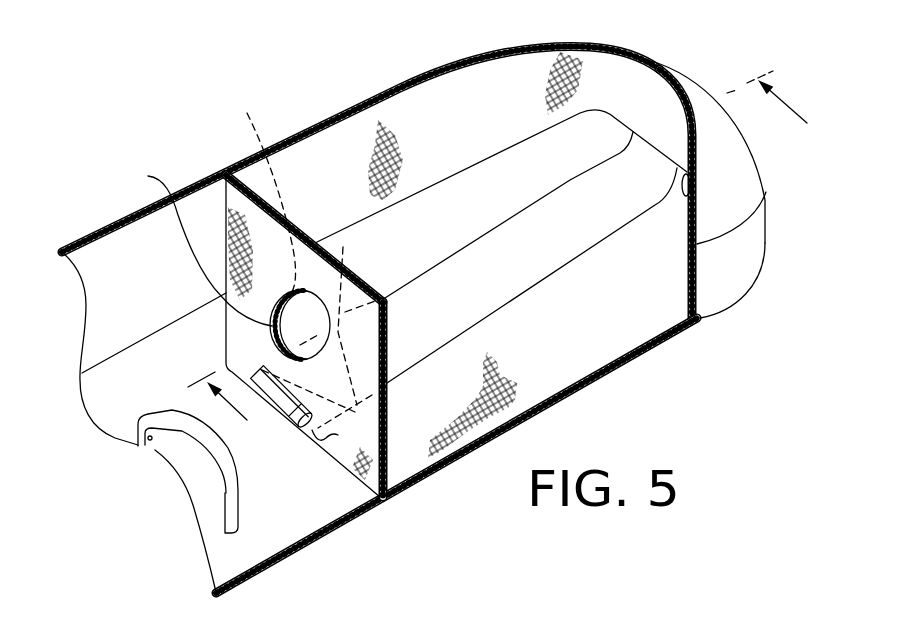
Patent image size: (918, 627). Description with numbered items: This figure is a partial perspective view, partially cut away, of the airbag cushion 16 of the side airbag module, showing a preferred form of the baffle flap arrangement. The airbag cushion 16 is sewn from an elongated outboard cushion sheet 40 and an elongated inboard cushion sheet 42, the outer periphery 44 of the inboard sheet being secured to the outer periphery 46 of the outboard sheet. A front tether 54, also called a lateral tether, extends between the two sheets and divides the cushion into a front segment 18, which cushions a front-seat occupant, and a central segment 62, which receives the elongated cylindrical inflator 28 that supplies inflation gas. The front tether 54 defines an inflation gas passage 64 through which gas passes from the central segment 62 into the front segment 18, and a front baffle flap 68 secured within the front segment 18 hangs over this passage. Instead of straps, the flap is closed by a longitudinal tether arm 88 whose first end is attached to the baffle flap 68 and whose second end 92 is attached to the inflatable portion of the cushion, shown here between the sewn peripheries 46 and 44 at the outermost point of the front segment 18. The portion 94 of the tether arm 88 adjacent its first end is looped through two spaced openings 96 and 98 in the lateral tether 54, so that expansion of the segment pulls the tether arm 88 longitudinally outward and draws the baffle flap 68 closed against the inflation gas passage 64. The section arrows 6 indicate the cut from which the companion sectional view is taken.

The airbag cushion 16 is at (338, 70).
The front segment 18 is at (733, 322).
The inflator 28 is at (195, 443).
The outboard cushion sheet 40 is at (750, 246).
The inboard cushion sheet 42 is at (691, 92).
The outer periphery 44 is at (652, 135).
The outer periphery 46 is at (698, 196).
The front tether 54 is at (242, 204).
The central segment 62 is at (108, 256).
The inflation gas passage 64 is at (192, 246).
The front baffle flap 68 is at (254, 197).
The longitudinal tether arm 88 is at (557, 263).
The second end 92 is at (655, 163).
The portion of tether arm 94 is at (282, 413).
The opening 96 is at (339, 434).
The opening 98 is at (322, 410).
The section line 6- 6 is at (510, 264).